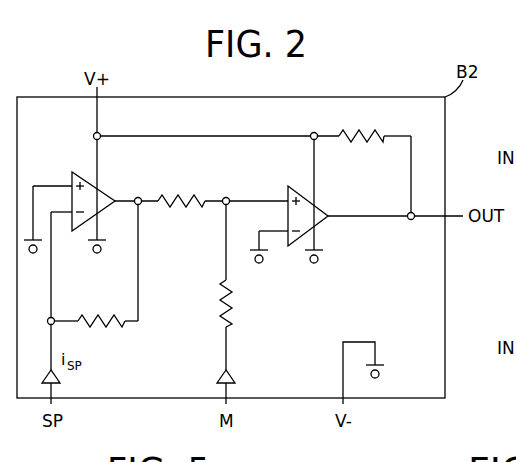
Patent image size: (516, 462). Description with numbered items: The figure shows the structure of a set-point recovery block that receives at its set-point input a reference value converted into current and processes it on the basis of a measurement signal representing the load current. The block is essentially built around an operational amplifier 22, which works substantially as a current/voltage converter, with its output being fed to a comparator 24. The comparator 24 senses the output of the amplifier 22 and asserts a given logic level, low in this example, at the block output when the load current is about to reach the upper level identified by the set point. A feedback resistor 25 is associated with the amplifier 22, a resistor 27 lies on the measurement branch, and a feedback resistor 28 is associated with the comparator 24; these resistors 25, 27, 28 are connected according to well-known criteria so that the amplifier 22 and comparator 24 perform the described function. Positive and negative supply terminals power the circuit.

The operational amplifier 22 is at (103, 193).
The comparator 24 is at (318, 226).
The resistor 25 is at (117, 326).
The resistor 27 is at (233, 313).
The resistor 28 is at (361, 146).